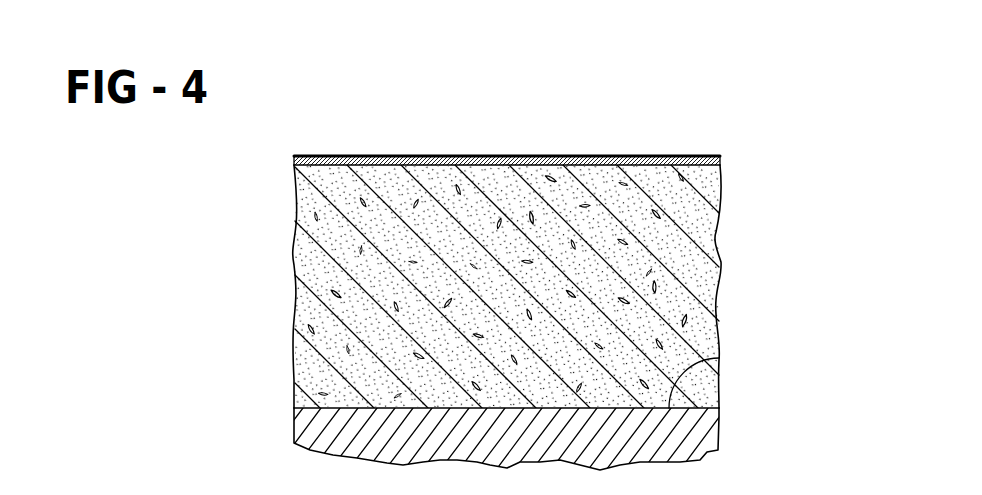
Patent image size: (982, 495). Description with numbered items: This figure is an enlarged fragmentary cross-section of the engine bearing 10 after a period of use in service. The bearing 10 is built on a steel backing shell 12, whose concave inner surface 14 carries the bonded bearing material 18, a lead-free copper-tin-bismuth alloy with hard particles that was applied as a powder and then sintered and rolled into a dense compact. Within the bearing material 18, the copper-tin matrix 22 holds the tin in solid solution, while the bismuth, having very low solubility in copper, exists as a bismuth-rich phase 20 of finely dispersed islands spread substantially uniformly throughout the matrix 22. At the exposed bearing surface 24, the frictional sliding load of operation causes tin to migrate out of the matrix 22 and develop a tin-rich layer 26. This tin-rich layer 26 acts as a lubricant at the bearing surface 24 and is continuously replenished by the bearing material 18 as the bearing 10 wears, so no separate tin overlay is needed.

The engine bearing 10 is at (732, 111).
The steel backing shell 12 is at (720, 433).
The concave inner surface 14 is at (718, 343).
The bearing material 18 is at (715, 238).
The bismuth-rich phase 20 is at (393, 308).
The matrix 22 is at (328, 355).
The bearing surface 24 is at (495, 157).
The tin-rich layer 26 is at (410, 157).